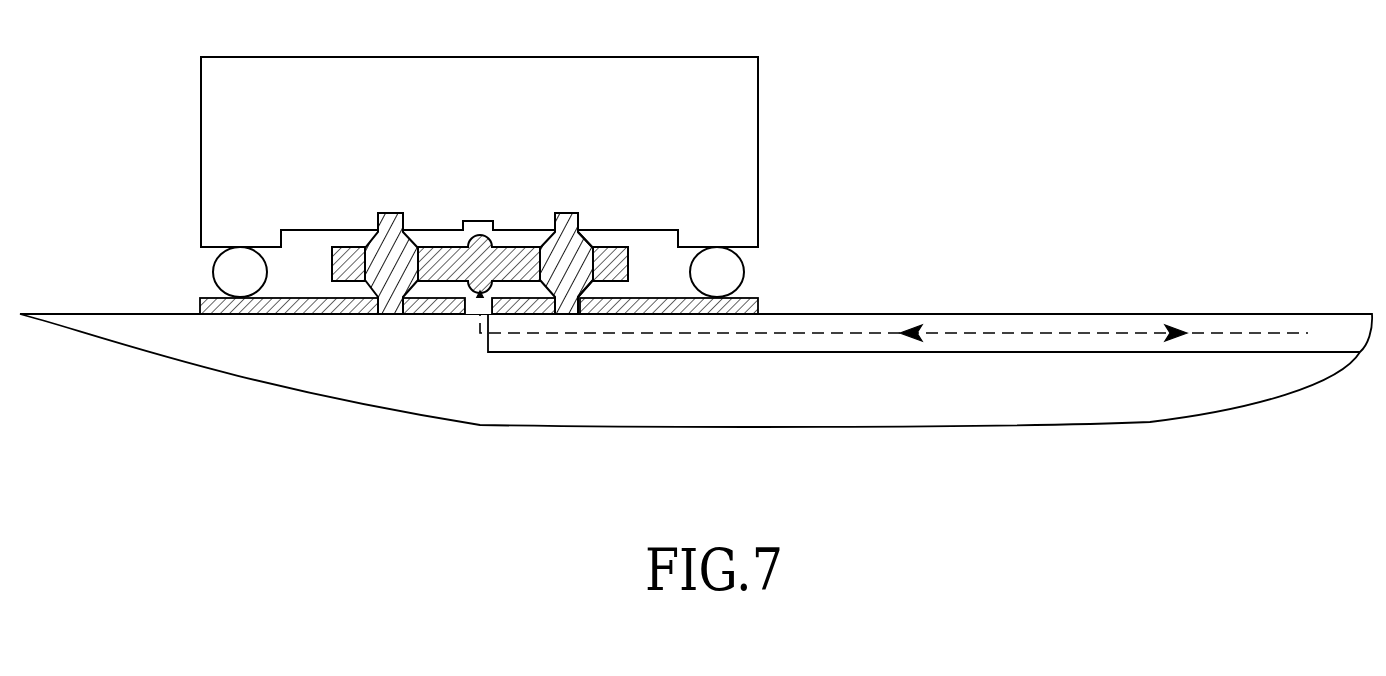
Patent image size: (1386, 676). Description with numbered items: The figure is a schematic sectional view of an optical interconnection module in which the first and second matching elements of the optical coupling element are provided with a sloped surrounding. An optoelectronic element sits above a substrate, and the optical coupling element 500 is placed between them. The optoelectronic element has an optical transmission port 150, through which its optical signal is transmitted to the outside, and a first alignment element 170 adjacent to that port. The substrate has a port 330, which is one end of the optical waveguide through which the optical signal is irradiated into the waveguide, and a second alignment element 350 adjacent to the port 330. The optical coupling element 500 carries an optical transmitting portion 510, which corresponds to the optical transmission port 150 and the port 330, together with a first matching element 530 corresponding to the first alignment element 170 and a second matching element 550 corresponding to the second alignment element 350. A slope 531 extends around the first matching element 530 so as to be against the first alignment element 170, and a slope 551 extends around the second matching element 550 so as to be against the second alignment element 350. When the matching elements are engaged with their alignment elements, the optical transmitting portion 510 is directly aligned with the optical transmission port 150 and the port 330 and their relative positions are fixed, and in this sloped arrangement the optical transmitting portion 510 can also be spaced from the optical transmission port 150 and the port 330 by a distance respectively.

The optical transmission port 150 is at (520, 241).
The first alignment element 170 is at (552, 212).
The port 330 is at (466, 306).
The second alignment element 350 is at (590, 299).
The optical coupling element 500 is at (318, 274).
The optical transmitting portion 510 is at (477, 298).
The first matching element 530 is at (574, 212).
The slope 531 is at (598, 229).
The second matching element 550 is at (565, 305).
The slope 551 is at (597, 291).